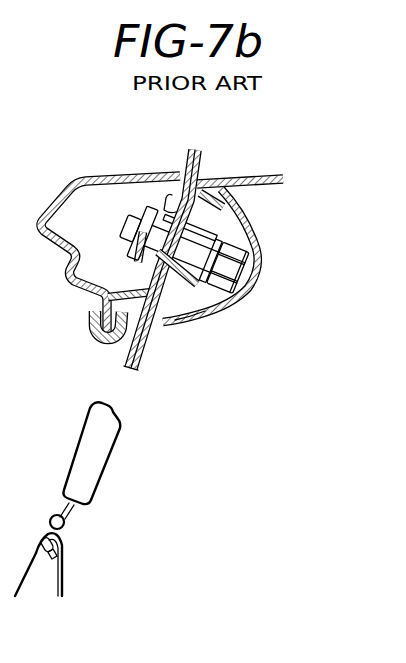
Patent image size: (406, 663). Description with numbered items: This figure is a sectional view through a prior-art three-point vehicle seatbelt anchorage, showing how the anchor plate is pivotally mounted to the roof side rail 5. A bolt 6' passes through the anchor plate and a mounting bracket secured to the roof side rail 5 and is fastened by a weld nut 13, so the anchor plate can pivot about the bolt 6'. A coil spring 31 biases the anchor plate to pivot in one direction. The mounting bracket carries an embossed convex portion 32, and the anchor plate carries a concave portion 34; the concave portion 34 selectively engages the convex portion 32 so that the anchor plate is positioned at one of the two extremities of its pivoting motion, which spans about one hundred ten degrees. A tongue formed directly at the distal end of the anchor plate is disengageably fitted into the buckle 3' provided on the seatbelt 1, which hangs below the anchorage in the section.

The roof side rail 5 is at (90, 177).
The weld nut 13 is at (130, 254).
The embossed convex portion 32 is at (151, 322).
The coil spring 31 is at (204, 216).
The bolt 6' is at (233, 255).
The concave portion 34 is at (195, 320).
The buckle 3' is at (105, 460).
The seatbelt 1 is at (62, 574).